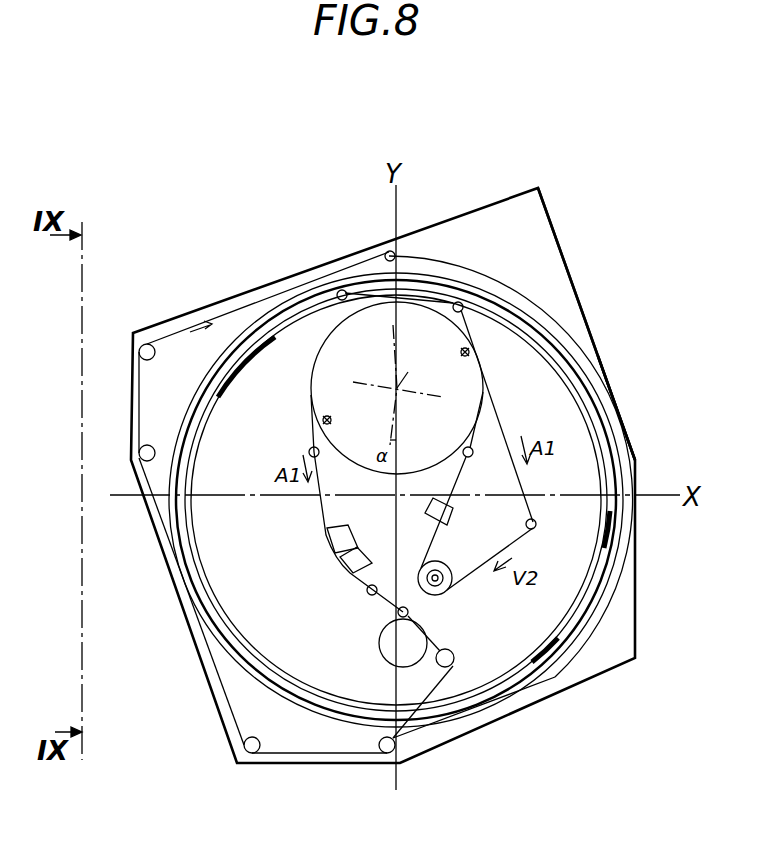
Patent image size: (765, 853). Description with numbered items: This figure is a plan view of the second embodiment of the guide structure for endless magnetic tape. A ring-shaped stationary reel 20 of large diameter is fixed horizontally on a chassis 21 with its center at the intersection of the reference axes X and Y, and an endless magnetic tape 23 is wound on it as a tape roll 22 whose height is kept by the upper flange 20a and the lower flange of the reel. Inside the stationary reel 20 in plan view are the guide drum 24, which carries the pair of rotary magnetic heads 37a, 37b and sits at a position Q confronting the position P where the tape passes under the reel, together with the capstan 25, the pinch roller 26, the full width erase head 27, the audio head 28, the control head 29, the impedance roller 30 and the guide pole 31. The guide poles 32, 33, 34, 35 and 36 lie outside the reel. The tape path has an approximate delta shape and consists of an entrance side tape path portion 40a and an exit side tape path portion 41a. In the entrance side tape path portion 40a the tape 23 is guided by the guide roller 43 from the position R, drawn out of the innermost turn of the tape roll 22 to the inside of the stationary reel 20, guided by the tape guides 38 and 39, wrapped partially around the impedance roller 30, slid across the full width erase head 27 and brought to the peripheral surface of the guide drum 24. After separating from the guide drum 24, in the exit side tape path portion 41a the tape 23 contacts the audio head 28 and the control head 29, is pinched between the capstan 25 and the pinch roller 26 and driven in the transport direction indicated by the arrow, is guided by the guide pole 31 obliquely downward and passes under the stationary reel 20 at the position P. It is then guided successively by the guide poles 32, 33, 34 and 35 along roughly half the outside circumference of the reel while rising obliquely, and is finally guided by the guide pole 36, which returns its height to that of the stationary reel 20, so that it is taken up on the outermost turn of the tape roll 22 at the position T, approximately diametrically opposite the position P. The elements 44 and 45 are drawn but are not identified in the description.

The stationary reel 20 is at (547, 317).
The upper flange 20a is at (598, 356).
The chassis 21 is at (535, 228).
The tape roll 22 is at (603, 591).
The endless magnetic tape 23 is at (507, 427).
The guide drum 24 is at (470, 385).
The capstan 25 is at (410, 611).
The pinch roller 26 is at (390, 640).
The full width erase head 27 is at (451, 514).
The audio head 28 is at (343, 538).
The control head 29 is at (350, 570).
The impedance roller 30 is at (443, 568).
The tape guide pole 31 is at (444, 685).
The tape guide pole 32 is at (384, 754).
The tape guide pole 33 is at (255, 754).
The tape guide pole 34 is at (142, 458).
The tape guide pole 35 is at (147, 344).
The tape guide pole 36 is at (388, 251).
The rotary magnetic head 37a is at (461, 350).
The rotary magnetic head 37b is at (328, 415).
The tape guide 38 is at (462, 311).
The tape guide 39 is at (536, 525).
The entrance side tape path portion 40a is at (527, 490).
The exit side tape path portion 41a is at (318, 512).
The guide roller 43 is at (340, 300).
The guide pin 44 is at (472, 456).
The guide pin 45 is at (310, 450).
The position T is at (484, 286).
The position R is at (340, 290).
The position Q is at (398, 385).
The position P is at (422, 708).